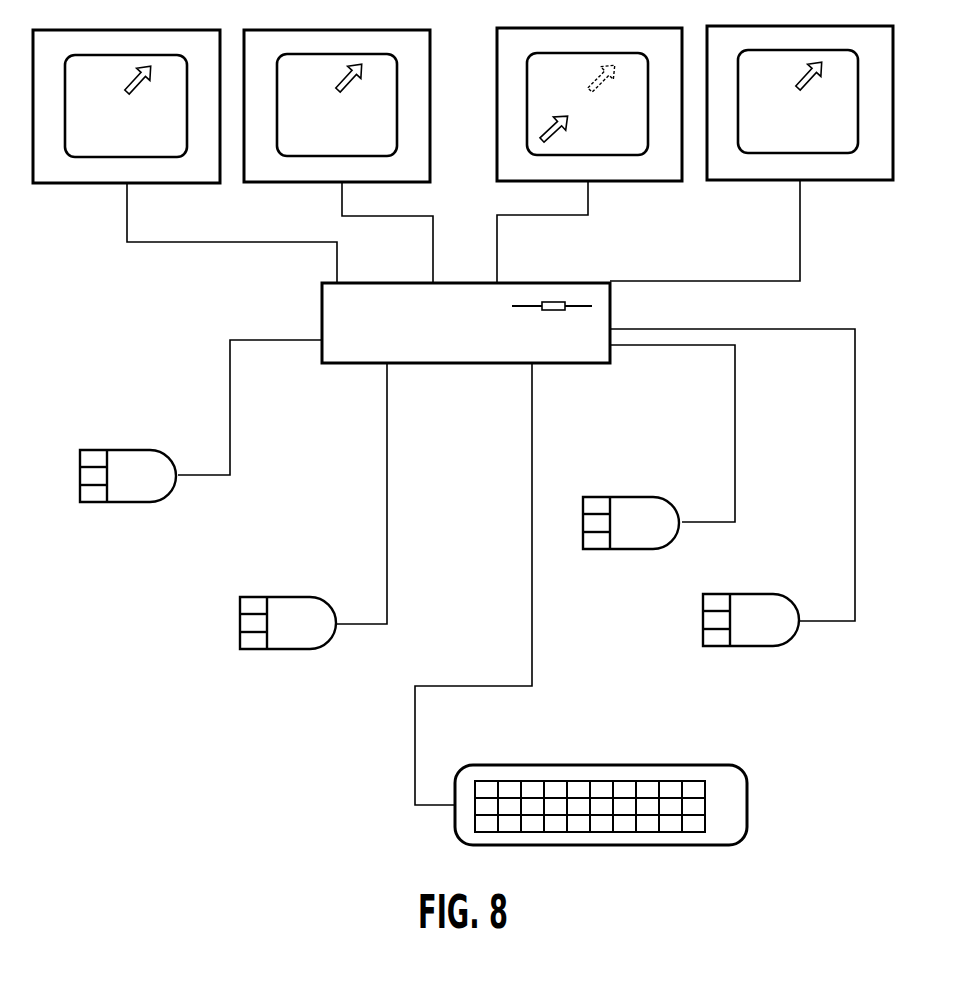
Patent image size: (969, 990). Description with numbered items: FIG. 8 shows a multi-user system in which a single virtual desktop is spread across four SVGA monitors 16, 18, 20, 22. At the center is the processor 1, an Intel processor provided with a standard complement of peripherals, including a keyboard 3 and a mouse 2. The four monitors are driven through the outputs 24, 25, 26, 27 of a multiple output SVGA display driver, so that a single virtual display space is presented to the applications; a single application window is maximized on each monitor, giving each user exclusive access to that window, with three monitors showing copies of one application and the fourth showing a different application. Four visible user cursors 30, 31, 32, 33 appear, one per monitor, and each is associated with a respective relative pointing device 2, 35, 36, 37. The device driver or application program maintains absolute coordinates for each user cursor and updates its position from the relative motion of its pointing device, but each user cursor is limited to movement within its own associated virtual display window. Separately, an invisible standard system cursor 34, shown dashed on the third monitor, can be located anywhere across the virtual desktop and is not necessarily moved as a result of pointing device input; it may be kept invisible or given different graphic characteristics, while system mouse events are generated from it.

The processor 1 is at (466, 323).
The mouse 2 is at (201, 421).
The keyboard 3 is at (581, 604).
The SVGA monitor 16 is at (126, 106).
The SVGA monitor 18 is at (337, 106).
The SVGA monitor 20 is at (589, 104).
The SVGA monitor 22 is at (800, 103).
The multiple output SVGA display driver 24 is at (244, 233).
The multiple output SVGA display driver 25 is at (400, 232).
The multiple output SVGA display driver 26 is at (542, 232).
The multiple output SVGA display driver 27 is at (705, 230).
The visible user cursor 30 is at (133, 80).
The visible user cursor 31 is at (344, 79).
The visible user cursor 32 is at (553, 130).
The visible user cursor 33 is at (804, 76).
The system cursor 34 is at (588, 75).
The relative pointing device 35 is at (313, 506).
The relative pointing device 36 is at (659, 447).
The relative pointing device 37 is at (732, 487).